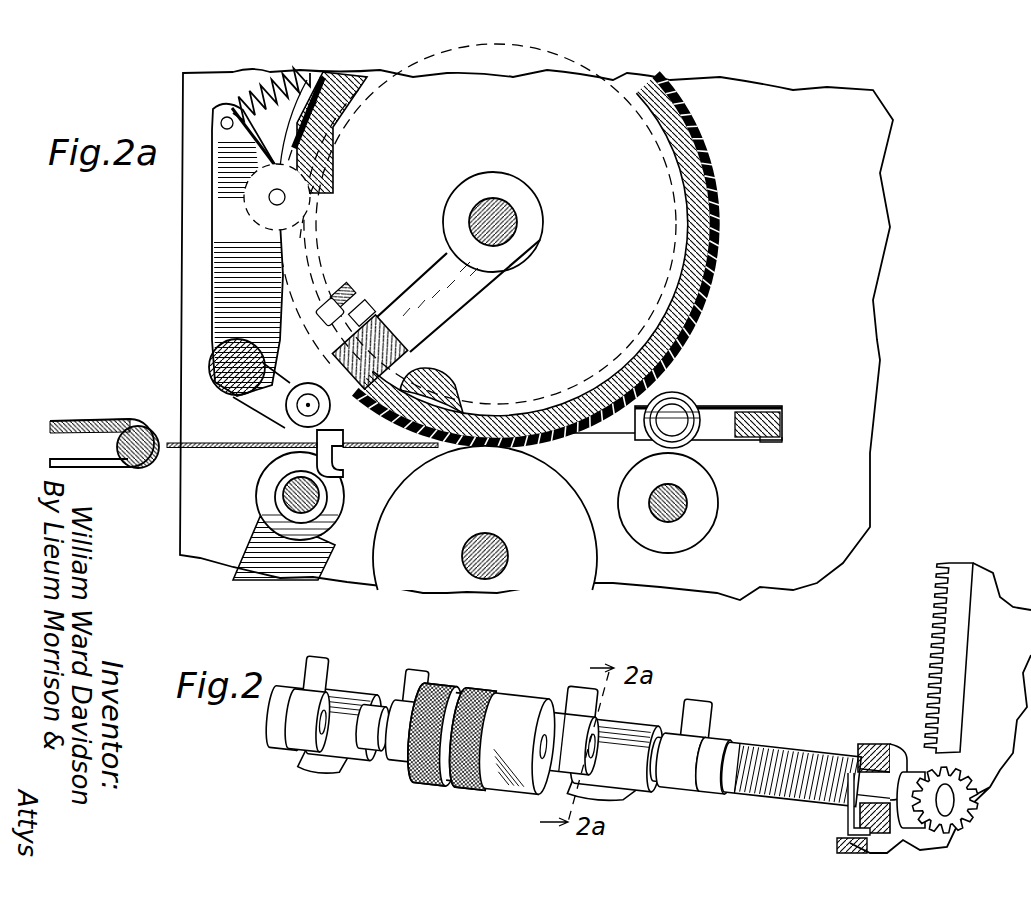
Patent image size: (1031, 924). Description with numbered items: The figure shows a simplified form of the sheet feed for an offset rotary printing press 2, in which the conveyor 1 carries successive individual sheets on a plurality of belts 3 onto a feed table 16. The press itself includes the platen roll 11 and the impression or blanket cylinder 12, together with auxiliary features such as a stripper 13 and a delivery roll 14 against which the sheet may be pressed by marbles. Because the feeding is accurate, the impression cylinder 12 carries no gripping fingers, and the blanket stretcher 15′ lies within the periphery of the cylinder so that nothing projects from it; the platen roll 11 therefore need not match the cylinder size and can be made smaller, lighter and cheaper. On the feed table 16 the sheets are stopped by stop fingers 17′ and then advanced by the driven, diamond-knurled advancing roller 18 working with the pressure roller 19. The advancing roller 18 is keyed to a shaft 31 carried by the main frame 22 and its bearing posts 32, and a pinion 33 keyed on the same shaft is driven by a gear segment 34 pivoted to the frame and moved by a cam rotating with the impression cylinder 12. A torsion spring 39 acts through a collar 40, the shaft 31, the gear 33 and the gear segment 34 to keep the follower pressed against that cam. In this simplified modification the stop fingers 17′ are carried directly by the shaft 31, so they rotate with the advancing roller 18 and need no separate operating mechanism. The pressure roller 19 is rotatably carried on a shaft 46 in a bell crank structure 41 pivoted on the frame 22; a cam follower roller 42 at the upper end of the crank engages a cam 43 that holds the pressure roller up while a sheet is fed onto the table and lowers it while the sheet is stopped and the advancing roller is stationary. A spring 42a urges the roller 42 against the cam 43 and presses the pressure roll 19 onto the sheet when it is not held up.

In FIG. 2A, the conveyor 1 is at (77, 421).
In FIG. 2A, the offset rotary printing press 2 is at (169, 91).
In FIG. 2A, the belts 3 is at (120, 430).
In FIG. 2A, the platen roll 11 is at (596, 560).
In FIG. 2A, the impression or blanket cylinder 12 is at (712, 162).
In FIG. 2A, the stripper 13 is at (607, 431).
In FIG. 2A, the delivery roll 14 is at (710, 490).
In FIG. 2A, the blanket stretcher 15′ is at (382, 316).
In FIG. 2A, the feed table 16 is at (190, 443).
In FIG. 2A, the stop fingers 17′ is at (340, 453).
In FIG. 2, the stop fingers 17′ is at (303, 663).
In FIG. 2A, the advancing roller 18 is at (254, 475).
In FIG. 2, the advancing roller 18 is at (458, 781).
In FIG. 2A, the pressure roller 19 is at (285, 424).
In FIG. 2, the main frame 22 is at (893, 750).
In FIG. 2A, the shaft 31 is at (294, 494).
In FIG. 2, the shaft 31 is at (521, 728).
In FIG. 2, the bearing posts 32 is at (325, 755).
In FIG. 2, the pinion 33 is at (967, 813).
In FIG. 2, the gear segment 34 is at (983, 578).
In FIG. 2, the torsion spring 39 is at (773, 795).
In FIG. 2, the collar 40 is at (720, 792).
In FIG. 2A, the bell crank structure 41 is at (212, 305).
In FIG. 2A, the cam follower roller 42 is at (244, 199).
In FIG. 2A, the spring 42a is at (250, 92).
In FIG. 2A, the cam 43 is at (311, 237).
In FIG. 2A, the shaft 46 is at (208, 365).